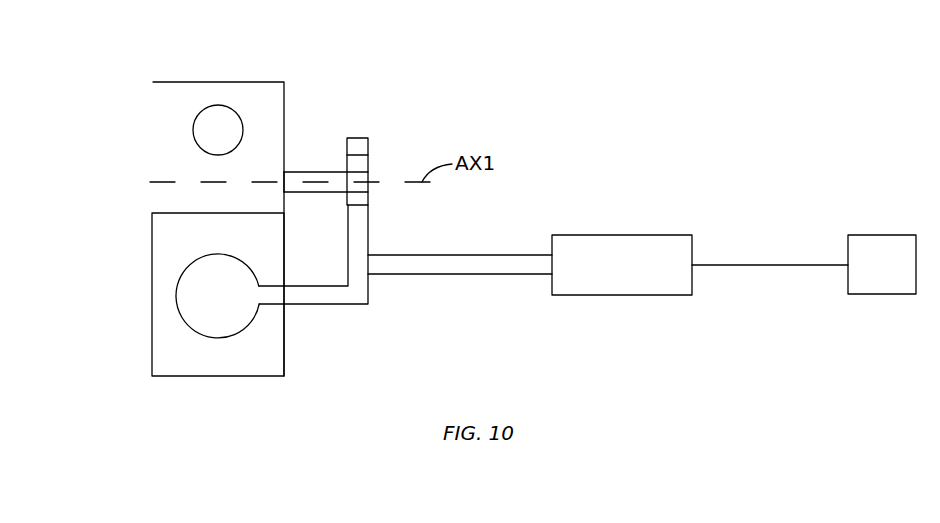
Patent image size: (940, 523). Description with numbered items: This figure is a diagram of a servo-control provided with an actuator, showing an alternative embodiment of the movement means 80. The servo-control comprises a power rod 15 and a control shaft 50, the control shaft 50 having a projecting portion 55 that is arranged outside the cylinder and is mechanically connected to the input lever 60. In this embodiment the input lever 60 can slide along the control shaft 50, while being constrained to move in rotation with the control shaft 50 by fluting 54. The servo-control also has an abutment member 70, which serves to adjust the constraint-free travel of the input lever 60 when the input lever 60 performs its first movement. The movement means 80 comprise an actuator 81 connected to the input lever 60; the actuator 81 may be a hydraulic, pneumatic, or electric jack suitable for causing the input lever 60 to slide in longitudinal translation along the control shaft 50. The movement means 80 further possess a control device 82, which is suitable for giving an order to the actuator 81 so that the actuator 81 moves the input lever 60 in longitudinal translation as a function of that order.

The power rod 15 is at (218, 105).
The control shaft 50 is at (292, 172).
The fluting 54 is at (369, 165).
The projecting portion 55 is at (292, 192).
The input lever 60 is at (315, 304).
The abutment member 70 is at (152, 296).
The movement means 80 is at (788, 227).
The actuator 81 is at (623, 235).
The control device 82 is at (883, 235).